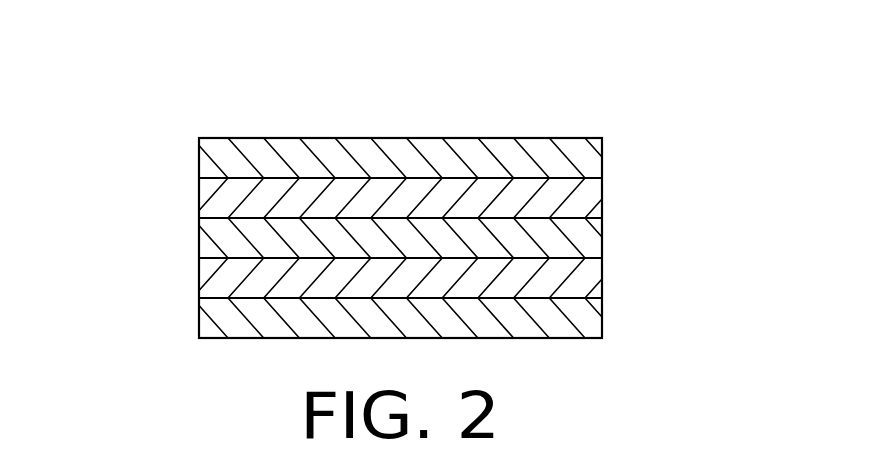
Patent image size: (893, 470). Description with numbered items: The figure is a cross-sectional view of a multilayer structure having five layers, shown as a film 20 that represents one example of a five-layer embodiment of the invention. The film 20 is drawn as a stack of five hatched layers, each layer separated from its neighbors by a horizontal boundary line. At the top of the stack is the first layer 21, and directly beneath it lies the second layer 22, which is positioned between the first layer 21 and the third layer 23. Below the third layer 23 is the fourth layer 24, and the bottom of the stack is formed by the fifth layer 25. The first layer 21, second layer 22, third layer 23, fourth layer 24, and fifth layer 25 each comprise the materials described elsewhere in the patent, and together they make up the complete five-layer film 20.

The film 20 is at (367, 105).
The first layer 21 is at (613, 163).
The second layer 22 is at (188, 203).
The third layer 23 is at (613, 242).
The fourth layer 24 is at (188, 282).
The fifth layer 25 is at (613, 322).